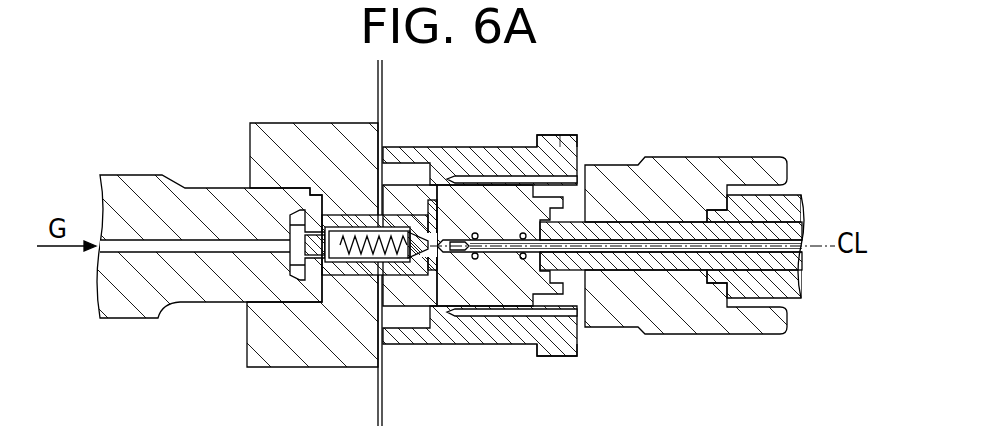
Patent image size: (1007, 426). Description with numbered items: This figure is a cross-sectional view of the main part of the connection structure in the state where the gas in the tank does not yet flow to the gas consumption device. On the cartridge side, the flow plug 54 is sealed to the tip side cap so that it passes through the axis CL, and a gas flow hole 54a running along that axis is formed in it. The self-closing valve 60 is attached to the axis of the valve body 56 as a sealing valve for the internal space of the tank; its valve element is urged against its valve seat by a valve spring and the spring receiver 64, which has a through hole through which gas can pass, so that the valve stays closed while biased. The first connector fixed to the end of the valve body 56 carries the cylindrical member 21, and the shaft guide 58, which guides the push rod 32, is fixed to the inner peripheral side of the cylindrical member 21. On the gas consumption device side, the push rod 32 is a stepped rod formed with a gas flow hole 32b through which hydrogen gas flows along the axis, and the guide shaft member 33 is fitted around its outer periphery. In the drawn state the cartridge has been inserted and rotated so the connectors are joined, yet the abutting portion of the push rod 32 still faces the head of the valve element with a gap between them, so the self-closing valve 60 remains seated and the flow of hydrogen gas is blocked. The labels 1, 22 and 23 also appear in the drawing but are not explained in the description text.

The injector assembly 1 is at (420, 126).
The cylindrical member 21 is at (492, 345).
The flange 22 is at (547, 135).
The seal groove 23 is at (563, 133).
The push rod 32 is at (751, 210).
The gas flow hole 32b is at (663, 258).
The guide shaft member 33 is at (643, 168).
The flow plug 54 is at (162, 308).
The gas flow hole 54a is at (187, 240).
The valve body 56 is at (342, 362).
The shaft guide 58 is at (486, 195).
The self-closing valve 60 is at (354, 221).
The spring receiver 64 is at (290, 262).